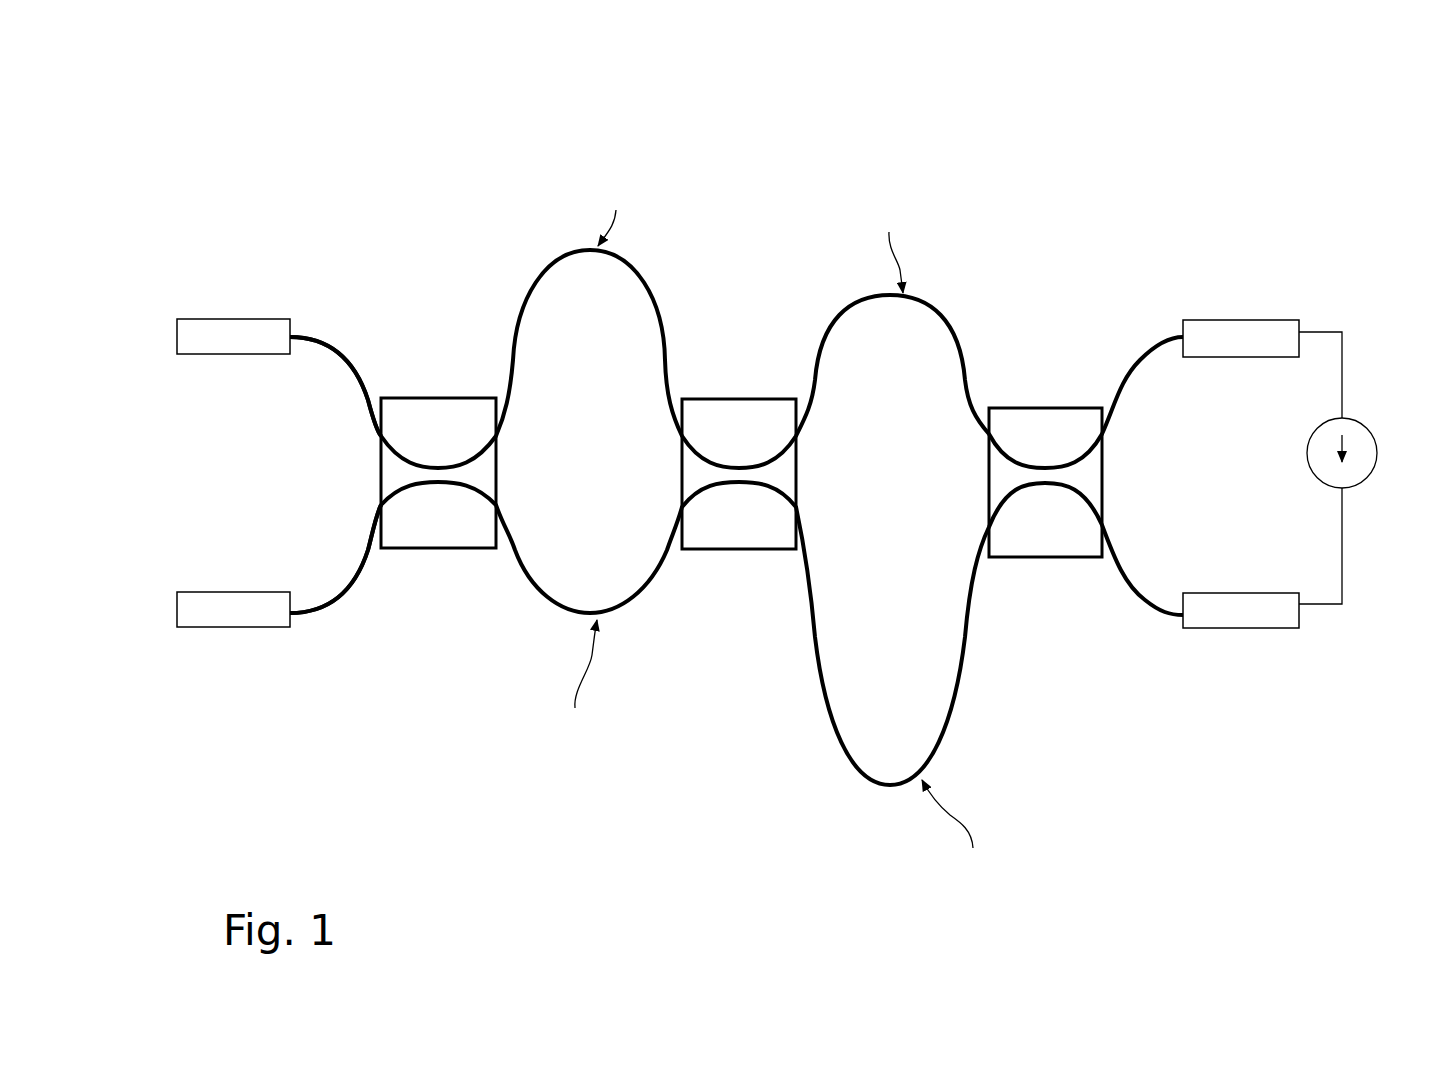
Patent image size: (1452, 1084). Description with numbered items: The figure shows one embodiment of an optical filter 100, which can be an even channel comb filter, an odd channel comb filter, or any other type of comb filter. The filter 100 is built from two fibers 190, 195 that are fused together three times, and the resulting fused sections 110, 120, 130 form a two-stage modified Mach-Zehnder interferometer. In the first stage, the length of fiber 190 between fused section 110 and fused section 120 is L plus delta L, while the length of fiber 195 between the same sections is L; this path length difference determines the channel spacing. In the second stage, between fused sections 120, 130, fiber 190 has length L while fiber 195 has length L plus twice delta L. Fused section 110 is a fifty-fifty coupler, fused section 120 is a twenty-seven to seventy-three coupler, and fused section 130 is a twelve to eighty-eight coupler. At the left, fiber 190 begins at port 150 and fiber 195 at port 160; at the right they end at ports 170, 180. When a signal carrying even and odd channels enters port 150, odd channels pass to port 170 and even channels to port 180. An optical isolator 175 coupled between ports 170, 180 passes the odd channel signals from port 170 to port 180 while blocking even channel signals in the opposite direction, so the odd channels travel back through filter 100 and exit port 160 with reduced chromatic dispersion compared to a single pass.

The optical filter 100 is at (1073, 173).
The fused section 110 is at (437, 551).
The fused section 120 is at (738, 558).
The fused section 130 is at (1045, 564).
The port 150 is at (201, 333).
The port 160 is at (231, 612).
The port 170 is at (1258, 341).
The optical isolator 175 is at (1381, 453).
The port 180 is at (1231, 607).
The fiber 190 is at (328, 337).
The fiber 195 is at (325, 609).